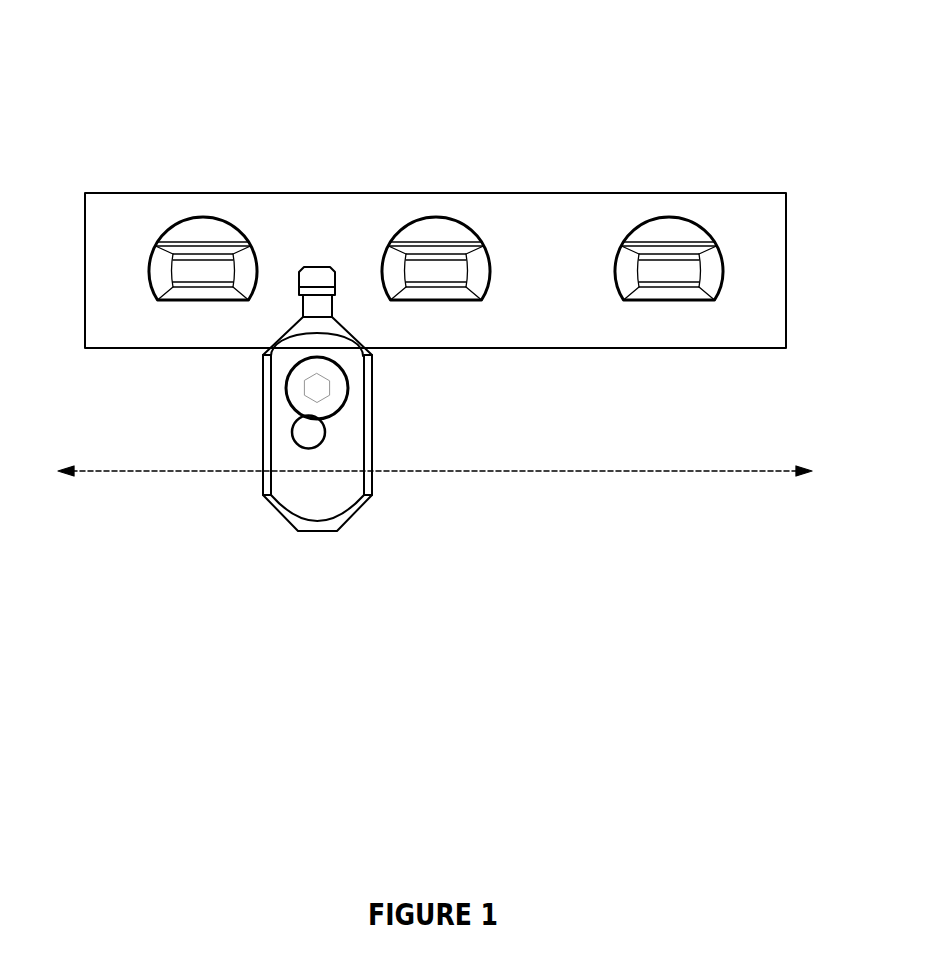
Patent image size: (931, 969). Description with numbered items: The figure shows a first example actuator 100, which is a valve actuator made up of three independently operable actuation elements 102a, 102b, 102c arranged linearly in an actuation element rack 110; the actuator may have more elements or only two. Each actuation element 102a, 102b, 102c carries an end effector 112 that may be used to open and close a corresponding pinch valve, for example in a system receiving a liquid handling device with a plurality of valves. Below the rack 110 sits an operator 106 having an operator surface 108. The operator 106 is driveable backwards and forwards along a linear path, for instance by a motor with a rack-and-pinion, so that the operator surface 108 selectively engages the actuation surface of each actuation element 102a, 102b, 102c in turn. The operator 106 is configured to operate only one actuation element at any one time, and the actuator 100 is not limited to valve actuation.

The actuator 100 is at (410, 26).
The actuation element 102a is at (222, 265).
The actuation element 102b is at (468, 326).
The actuation element 102c is at (653, 326).
The operator 106 is at (360, 350).
The operator surface 108 is at (329, 275).
The actuation element rack 110 is at (732, 192).
The end effector 112 is at (200, 266).